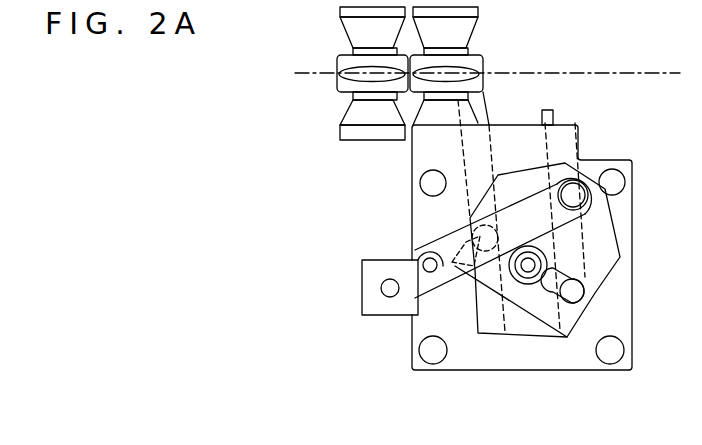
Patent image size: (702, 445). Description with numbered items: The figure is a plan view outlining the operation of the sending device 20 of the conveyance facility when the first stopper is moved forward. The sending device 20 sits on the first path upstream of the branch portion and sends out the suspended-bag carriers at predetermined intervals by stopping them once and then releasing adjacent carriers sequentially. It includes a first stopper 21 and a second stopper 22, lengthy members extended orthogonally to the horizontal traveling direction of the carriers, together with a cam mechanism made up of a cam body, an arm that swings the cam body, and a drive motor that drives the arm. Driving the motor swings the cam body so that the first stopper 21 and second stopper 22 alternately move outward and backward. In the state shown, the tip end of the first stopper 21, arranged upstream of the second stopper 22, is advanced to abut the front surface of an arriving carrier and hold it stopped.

The sending device 20 is at (413, 385).
The first stopper 21 is at (478, 108).
The second stopper 22 is at (553, 117).